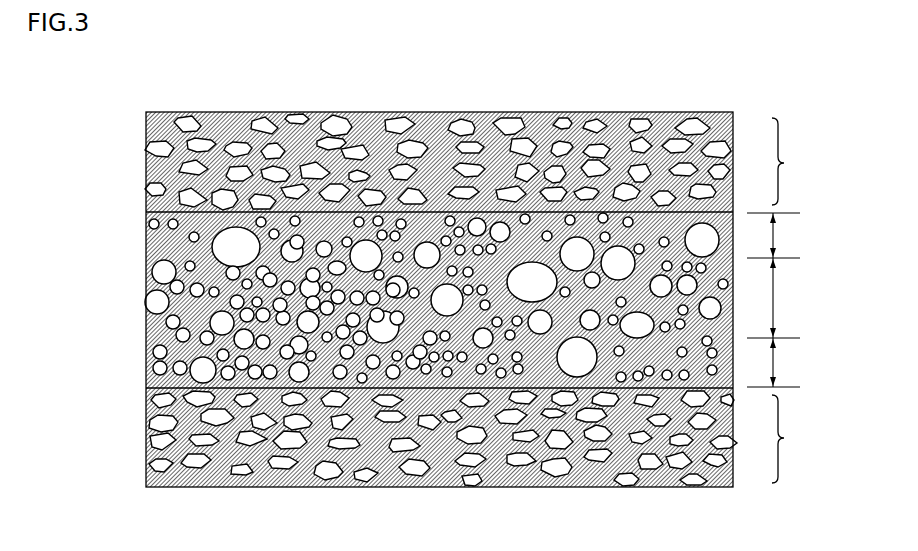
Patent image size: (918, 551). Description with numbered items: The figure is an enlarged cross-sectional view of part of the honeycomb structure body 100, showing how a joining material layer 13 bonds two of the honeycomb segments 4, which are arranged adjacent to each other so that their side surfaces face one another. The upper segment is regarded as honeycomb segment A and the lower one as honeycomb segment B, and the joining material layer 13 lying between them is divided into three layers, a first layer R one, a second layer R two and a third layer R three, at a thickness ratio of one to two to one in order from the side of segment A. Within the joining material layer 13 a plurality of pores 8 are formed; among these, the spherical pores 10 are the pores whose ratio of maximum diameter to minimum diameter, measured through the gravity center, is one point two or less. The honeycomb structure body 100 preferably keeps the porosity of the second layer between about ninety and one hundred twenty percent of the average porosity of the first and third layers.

The honeycomb structure body 100 is at (477, 300).
The honeycomb segments 4 is at (370, 122).
The joining material layer 13 is at (477, 300).
The pores 8 is at (392, 298).
The spherical pores 10 is at (222, 242).